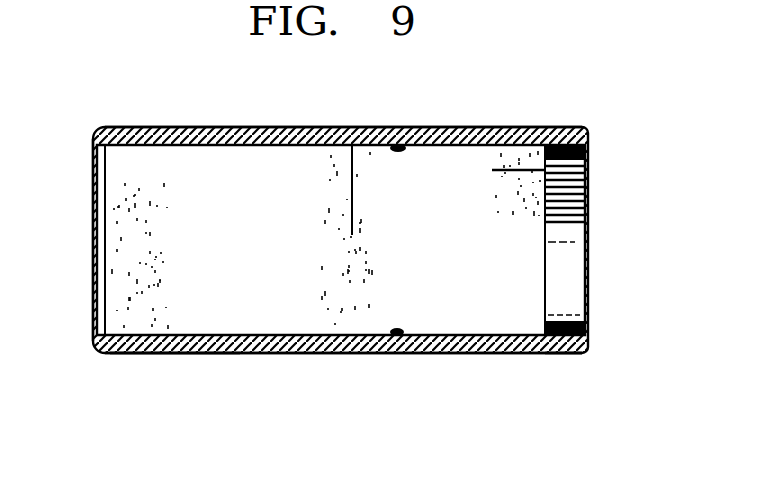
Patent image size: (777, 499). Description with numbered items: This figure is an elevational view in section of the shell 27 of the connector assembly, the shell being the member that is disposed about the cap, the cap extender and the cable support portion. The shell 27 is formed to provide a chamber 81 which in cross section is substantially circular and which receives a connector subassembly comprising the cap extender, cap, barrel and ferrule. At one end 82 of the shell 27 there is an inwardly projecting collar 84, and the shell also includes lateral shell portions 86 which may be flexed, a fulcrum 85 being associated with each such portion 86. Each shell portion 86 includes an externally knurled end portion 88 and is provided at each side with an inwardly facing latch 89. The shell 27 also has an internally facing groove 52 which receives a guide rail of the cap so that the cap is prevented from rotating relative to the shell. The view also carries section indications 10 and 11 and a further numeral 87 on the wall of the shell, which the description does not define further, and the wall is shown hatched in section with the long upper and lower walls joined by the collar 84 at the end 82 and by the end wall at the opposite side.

The shell 27 is at (199, 101).
The lateral shell portion 86 is at (437, 127).
The fulcrum 85 is at (283, 335).
The end wall 87 is at (118, 126).
The externally knurled end portion 88 is at (210, 354).
The chamber 81 is at (587, 188).
The inwardly projecting collar 84 is at (565, 282).
The end 82 is at (585, 348).
The internally facing groove 52 is at (496, 170).
The inwardly facing latch 89 is at (397, 330).
The section line 10- 10 is at (75, 243).
The section line 11- 11 is at (560, 118).